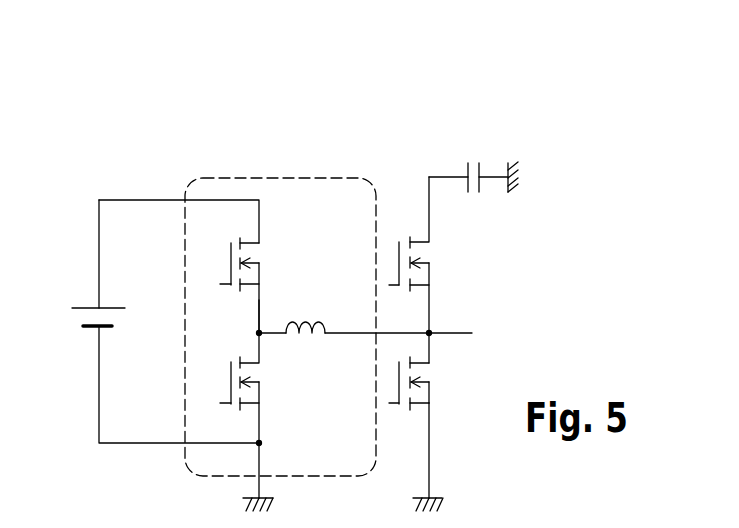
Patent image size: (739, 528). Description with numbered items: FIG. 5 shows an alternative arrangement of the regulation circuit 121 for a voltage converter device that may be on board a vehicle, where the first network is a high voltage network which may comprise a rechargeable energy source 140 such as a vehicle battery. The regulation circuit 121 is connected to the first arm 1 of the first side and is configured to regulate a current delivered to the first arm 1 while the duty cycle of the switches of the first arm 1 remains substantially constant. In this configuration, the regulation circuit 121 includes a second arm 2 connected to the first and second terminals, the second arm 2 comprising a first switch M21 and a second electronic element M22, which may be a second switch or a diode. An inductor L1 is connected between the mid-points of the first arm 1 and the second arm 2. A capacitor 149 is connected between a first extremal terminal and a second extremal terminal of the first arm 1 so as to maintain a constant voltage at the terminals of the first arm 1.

The first arm 1 is at (441, 306).
The second arm 2 is at (271, 311).
The regulation circuit 121 is at (279, 175).
The rechargeable energy source 140 is at (86, 313).
The capacitor 149 is at (473, 166).
The inductor L1 is at (305, 338).
The first switch M21 is at (258, 248).
The second electronic element M22 is at (256, 392).